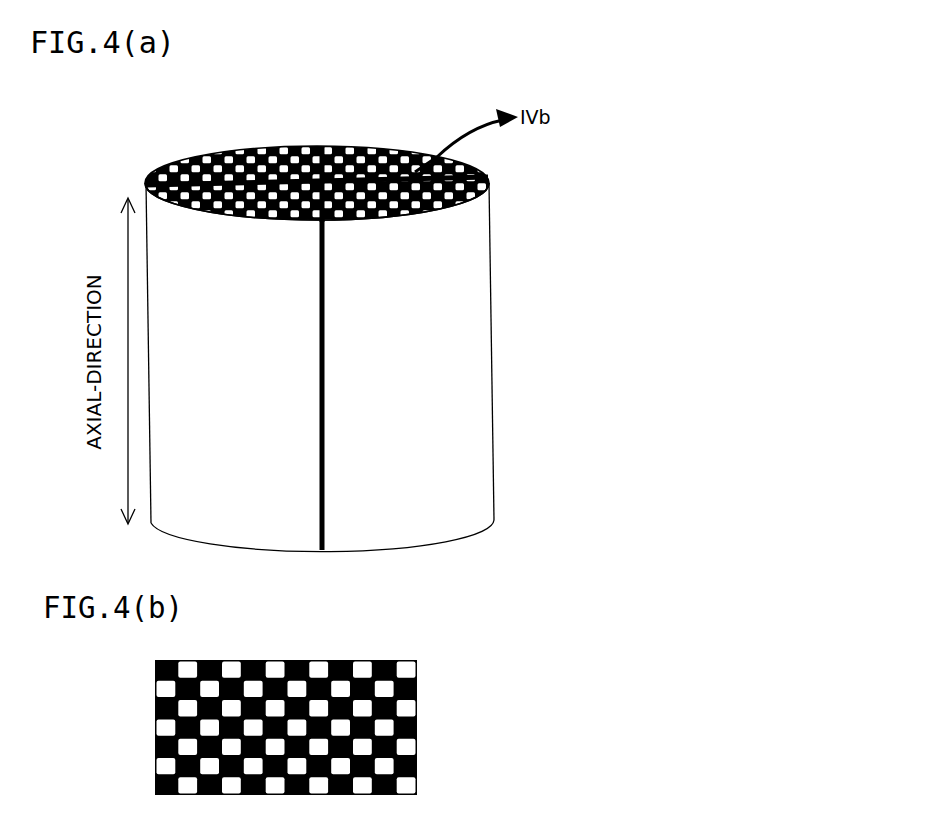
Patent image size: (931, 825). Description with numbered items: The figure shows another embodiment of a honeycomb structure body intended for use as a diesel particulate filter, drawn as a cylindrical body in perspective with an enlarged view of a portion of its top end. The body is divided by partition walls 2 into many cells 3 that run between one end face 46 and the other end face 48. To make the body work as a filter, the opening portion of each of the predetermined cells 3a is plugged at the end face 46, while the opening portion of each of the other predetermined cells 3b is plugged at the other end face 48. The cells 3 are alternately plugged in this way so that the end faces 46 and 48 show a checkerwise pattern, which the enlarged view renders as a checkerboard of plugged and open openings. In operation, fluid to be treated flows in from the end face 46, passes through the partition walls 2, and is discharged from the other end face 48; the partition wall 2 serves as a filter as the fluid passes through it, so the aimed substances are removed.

In FIG. 4A, the partition wall 2 is at (305, 148).
In FIG. 4A, the cells 3 is at (352, 168).
In FIG. 4A, the end face 46 is at (443, 209).
In FIG. 4A, the other end face 48 is at (445, 541).
In FIG. 4B, the predetermined cells 3a is at (418, 768).
In FIG. 4B, the other predetermined cells 3b is at (385, 727).